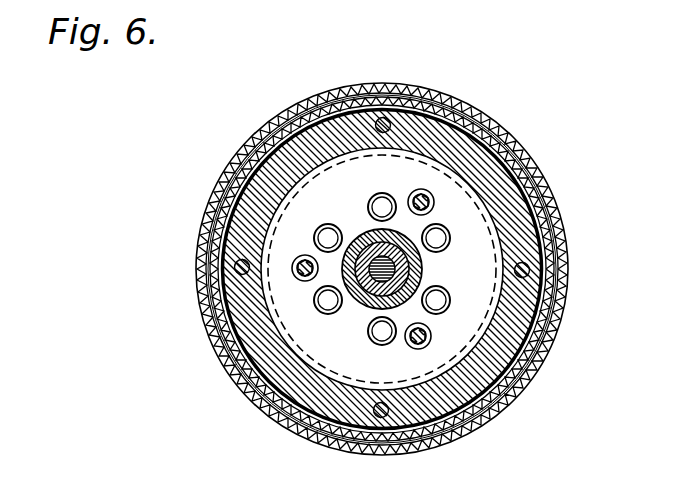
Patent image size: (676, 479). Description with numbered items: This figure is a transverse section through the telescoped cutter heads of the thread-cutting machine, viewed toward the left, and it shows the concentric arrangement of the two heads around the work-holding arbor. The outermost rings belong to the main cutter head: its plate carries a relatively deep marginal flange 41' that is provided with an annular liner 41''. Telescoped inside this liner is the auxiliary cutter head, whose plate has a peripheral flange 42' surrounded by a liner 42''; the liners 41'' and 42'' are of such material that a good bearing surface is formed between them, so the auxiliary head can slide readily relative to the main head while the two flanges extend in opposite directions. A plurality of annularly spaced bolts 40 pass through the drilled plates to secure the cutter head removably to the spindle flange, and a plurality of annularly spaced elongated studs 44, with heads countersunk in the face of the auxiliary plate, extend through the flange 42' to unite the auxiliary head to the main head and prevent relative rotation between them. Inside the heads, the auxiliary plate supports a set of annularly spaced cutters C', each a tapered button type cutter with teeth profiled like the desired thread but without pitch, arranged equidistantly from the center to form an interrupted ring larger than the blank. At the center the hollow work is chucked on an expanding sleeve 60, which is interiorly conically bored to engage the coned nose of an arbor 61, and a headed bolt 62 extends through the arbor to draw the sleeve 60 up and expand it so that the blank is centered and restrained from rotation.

The bolts 40 is at (416, 190).
The marginal flange 41' is at (404, 269).
The annular liner 41'' is at (390, 269).
The peripheral flange 42' is at (382, 267).
The liner 42'' is at (397, 269).
The elongated studs 44 is at (528, 271).
The expanding sleeve 60 is at (402, 236).
The arbor 61 is at (365, 299).
The headed bolt 62 is at (396, 267).
The cutters C' is at (393, 271).